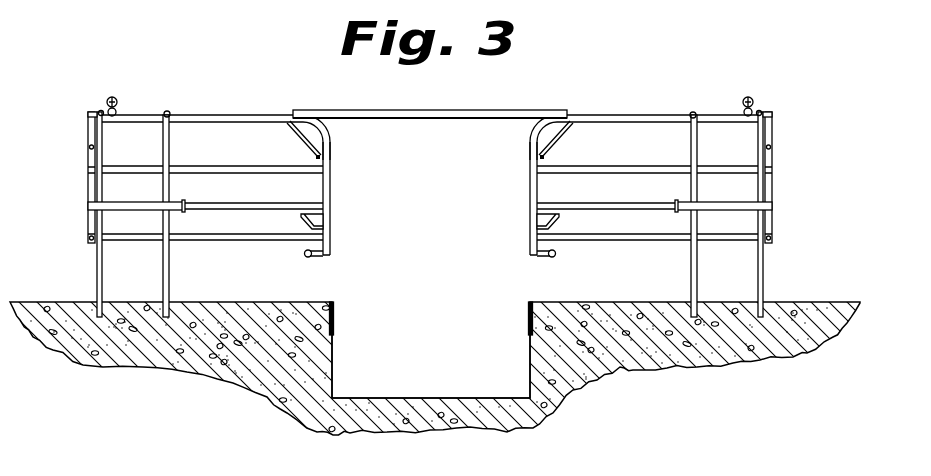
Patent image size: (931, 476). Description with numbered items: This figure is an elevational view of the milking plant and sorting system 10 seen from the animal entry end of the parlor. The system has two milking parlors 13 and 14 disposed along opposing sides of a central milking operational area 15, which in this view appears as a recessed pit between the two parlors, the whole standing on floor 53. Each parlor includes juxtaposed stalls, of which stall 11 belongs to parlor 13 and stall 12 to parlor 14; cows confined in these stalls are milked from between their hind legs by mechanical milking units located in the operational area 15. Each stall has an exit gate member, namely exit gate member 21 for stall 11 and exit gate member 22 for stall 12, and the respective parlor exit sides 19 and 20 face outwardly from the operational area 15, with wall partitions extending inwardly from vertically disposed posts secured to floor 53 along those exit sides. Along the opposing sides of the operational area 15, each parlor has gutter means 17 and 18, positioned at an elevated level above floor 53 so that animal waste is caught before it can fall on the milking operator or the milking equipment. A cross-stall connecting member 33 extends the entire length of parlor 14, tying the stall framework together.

The milking plant and sorting system 10 is at (607, 85).
The stall 11 is at (145, 105).
The stall 12 is at (719, 107).
The milking parlor 13 is at (342, 142).
The milking parlor 14 is at (516, 141).
The milking operational area 15 is at (439, 355).
The gutter means 17 is at (302, 225).
The gutter means 18 is at (560, 223).
The parlor exit side 19 is at (78, 153).
The parlor exit side 20 is at (786, 165).
The exit gate member 21 is at (93, 219).
The exit gate member 22 is at (773, 215).
The cross-stall connecting member 33 is at (168, 111).
The floor 53 is at (232, 302).